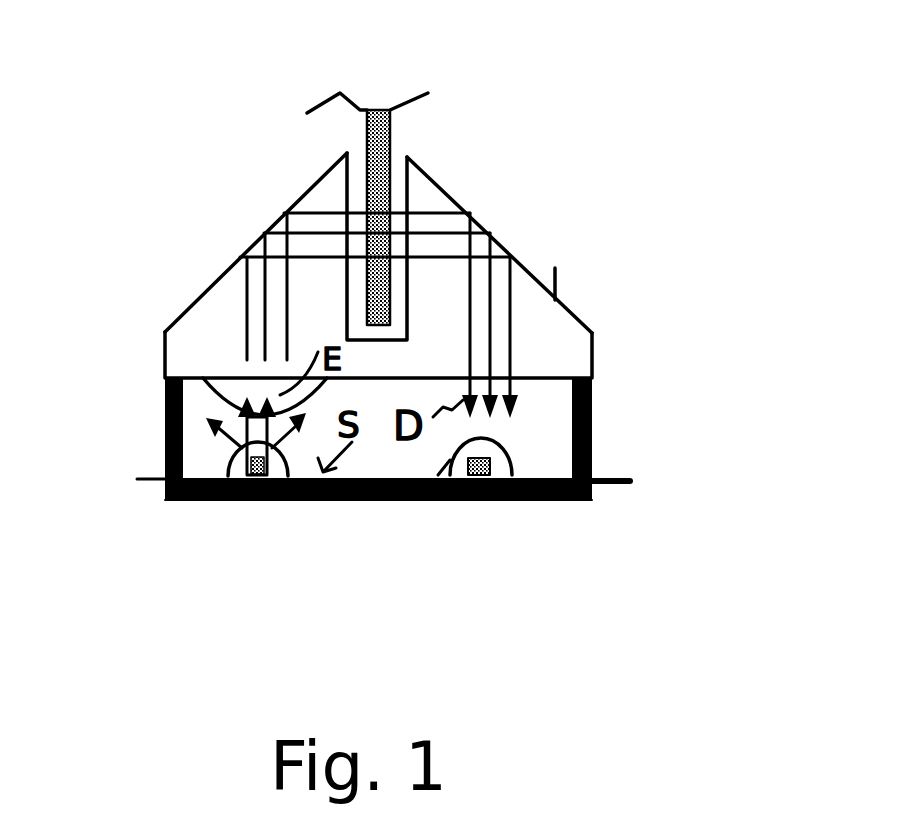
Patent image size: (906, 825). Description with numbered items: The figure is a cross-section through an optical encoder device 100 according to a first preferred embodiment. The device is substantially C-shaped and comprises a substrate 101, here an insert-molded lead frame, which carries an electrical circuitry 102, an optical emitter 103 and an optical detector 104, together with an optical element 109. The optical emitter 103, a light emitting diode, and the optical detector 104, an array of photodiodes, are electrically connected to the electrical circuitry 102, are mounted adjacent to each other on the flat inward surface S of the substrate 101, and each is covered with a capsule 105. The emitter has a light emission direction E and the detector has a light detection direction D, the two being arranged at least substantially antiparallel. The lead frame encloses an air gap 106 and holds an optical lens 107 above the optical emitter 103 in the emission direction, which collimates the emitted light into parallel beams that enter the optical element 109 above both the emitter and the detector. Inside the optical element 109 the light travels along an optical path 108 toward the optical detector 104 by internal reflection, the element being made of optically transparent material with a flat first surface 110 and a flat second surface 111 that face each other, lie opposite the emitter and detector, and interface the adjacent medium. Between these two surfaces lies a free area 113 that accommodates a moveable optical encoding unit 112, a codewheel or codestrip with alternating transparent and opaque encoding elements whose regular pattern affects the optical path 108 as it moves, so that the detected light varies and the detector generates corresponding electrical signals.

The optical encoder device 100 is at (633, 115).
The substrate 101 is at (590, 411).
The electrical circuitry 102 is at (627, 487).
The optical emitter 103 is at (237, 498).
The optical detector 104 is at (512, 500).
The capsule 105 is at (420, 500).
The air gap 106 is at (163, 430).
The optical lens 107 is at (227, 387).
The optical path 108 is at (447, 277).
The optical element 109 is at (210, 323).
The first surface 110 is at (214, 264).
The second surface 111 is at (556, 292).
The optical encoding unit 112 is at (373, 193).
The free area 113 is at (383, 330).